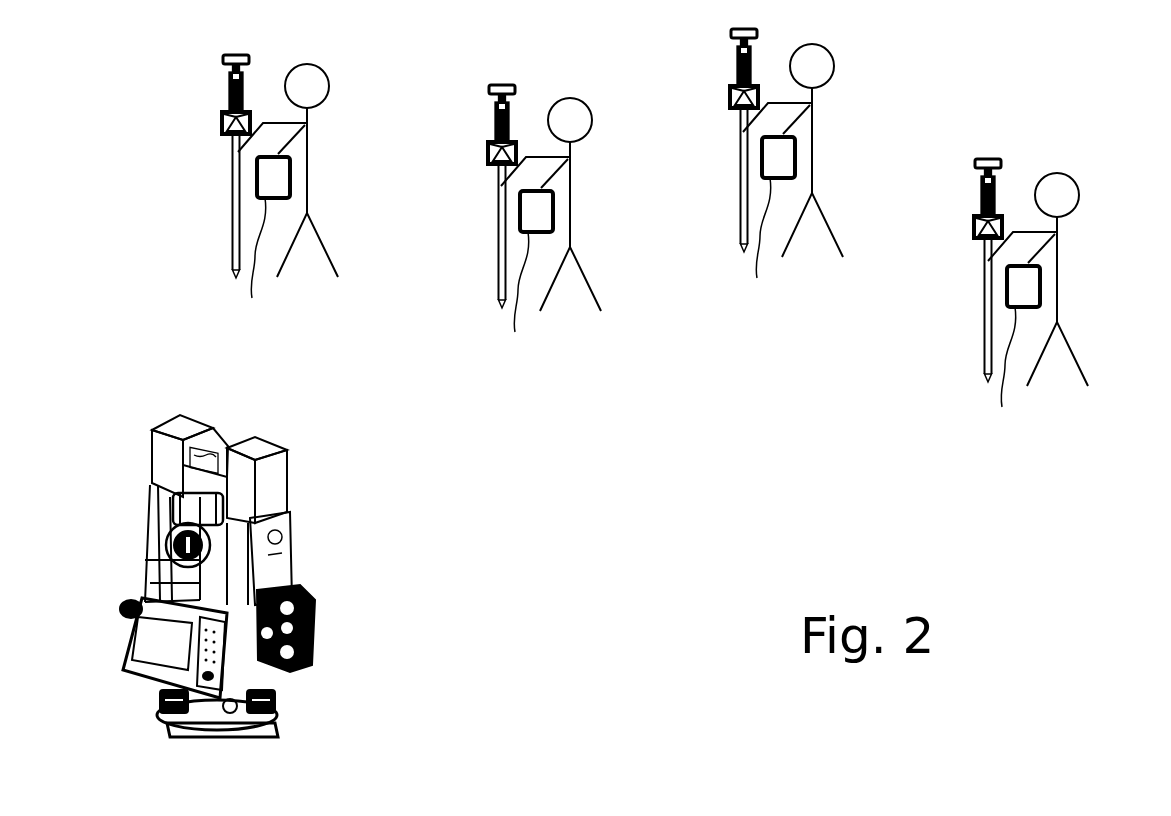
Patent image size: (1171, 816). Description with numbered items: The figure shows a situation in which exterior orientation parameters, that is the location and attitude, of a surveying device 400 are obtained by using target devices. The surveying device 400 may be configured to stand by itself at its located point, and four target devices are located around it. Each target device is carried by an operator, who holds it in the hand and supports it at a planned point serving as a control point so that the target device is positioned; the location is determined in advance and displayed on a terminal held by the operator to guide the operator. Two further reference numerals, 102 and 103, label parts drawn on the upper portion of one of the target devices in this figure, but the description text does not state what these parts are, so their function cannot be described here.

The prism (retroreflector target) 102 is at (730, 98).
The pole body / sensor unit 103 is at (735, 62).
The surveying device 400 is at (328, 680).